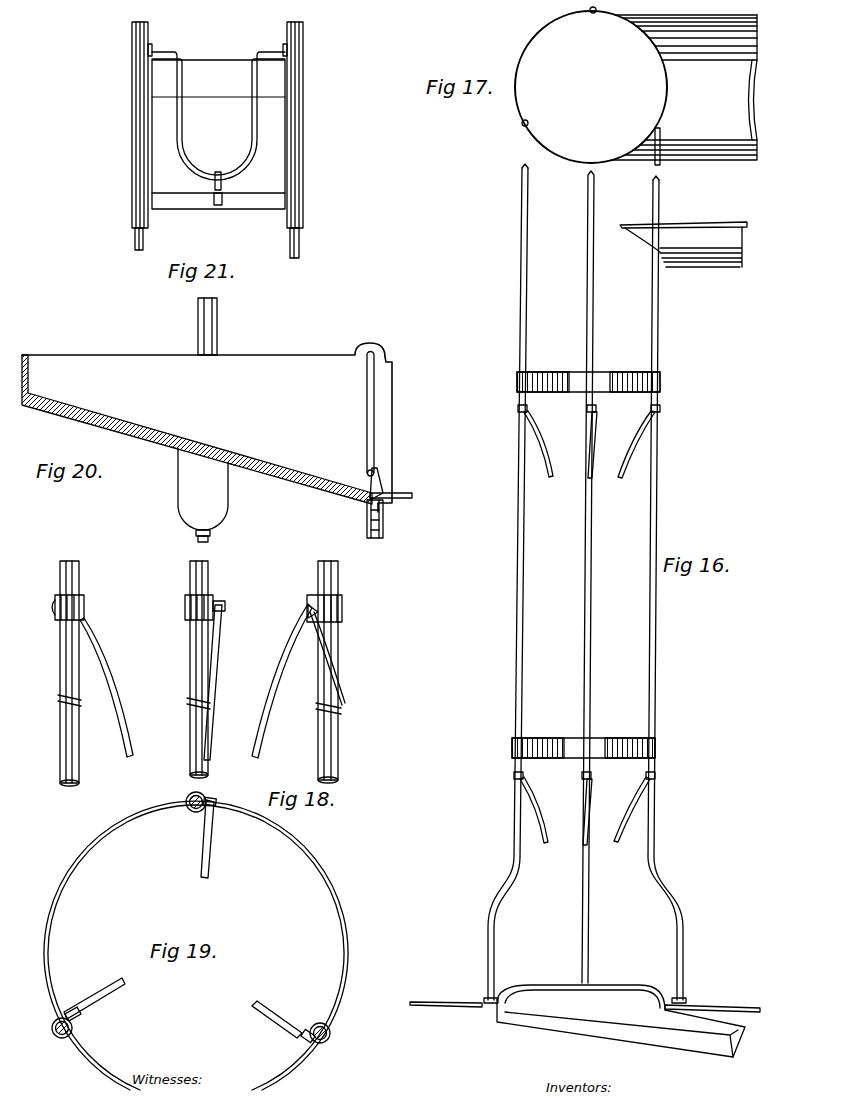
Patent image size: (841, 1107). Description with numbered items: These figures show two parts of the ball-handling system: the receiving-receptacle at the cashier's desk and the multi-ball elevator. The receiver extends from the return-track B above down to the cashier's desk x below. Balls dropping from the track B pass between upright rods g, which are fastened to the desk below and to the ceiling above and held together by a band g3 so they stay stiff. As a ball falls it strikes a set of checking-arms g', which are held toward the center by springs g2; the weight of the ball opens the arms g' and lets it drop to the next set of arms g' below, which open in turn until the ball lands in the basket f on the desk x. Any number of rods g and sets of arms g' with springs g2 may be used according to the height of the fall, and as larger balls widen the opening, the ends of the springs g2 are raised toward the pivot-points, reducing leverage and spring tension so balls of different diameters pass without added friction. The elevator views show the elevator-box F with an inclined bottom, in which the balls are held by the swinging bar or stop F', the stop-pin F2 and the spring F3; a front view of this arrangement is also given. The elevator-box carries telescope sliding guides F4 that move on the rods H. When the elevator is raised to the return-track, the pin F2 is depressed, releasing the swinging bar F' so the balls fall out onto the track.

In FIG. 21, the elevator-box F is at (218, 147).
In FIG. 20, the elevator-box F is at (207, 442).
In FIG. 21, the stop F' is at (218, 116).
In FIG. 20, the stop F' is at (356, 414).
In FIG. 21, the stop-pin F2 is at (221, 187).
In FIG. 20, the stop-pin F2 is at (384, 484).
In FIG. 20, the spring F3 is at (385, 528).
In FIG. 21, the sliding guides F4 is at (316, 193).
In FIG. 21, the rods H is at (133, 246).
In FIG. 20, the rods H is at (218, 336).
In FIG. 18, the rods g is at (205, 673).
In FIG. 19, the rods g is at (192, 920).
In FIG. 17, the rods g is at (591, 86).
In FIG. 16, the rods g is at (585, 583).
In FIG. 18, the checking-arms g' is at (196, 682).
In FIG. 19, the checking-arms g' is at (183, 919).
In FIG. 16, the checking-arms g' is at (587, 625).
In FIG. 18, the springs g2 is at (82, 703).
In FIG. 19, the springs g2 is at (307, 1030).
In FIG. 19, the band g3 is at (196, 945).
In FIG. 17, the band g3 is at (525, 50).
In FIG. 16, the band g3 is at (662, 384).
In FIG. 17, the track B is at (752, 17).
In FIG. 16, the track B is at (746, 225).
In FIG. 16, the basket f is at (565, 1034).
In FIG. 16, the desk x is at (585, 1002).